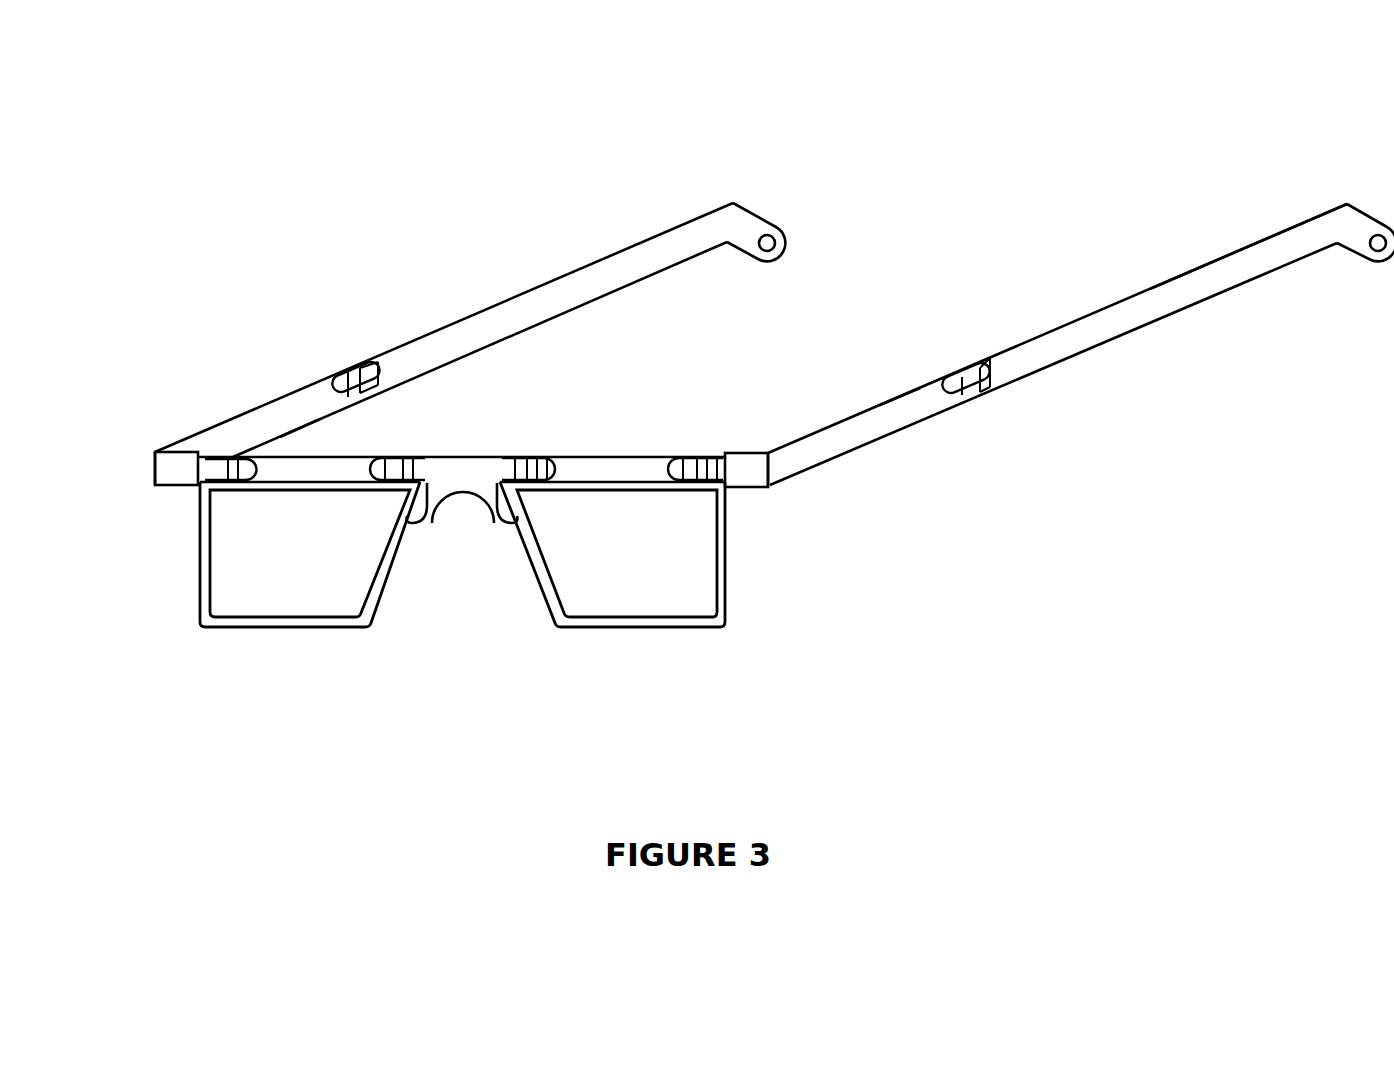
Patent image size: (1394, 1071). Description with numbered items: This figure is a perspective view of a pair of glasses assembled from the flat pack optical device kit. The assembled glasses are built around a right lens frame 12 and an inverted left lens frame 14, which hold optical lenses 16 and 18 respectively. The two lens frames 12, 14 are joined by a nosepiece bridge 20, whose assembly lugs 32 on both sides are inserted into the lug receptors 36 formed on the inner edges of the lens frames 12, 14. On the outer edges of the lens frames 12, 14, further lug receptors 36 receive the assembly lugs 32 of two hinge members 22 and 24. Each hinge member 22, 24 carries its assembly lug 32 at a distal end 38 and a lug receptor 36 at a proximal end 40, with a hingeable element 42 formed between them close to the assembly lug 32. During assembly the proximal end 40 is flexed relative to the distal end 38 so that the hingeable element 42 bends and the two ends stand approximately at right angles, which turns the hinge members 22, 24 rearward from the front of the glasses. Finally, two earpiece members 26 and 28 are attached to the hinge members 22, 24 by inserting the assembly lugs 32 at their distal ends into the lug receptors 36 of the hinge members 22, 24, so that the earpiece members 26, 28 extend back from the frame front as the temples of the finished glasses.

The lens frame 12 is at (200, 558).
The lens frame 14 is at (727, 565).
The optical lens 16 is at (272, 580).
The optical lens 18 is at (675, 553).
The nosepiece bridge 20 is at (495, 525).
The hinge member 22 is at (262, 405).
The hinge member 24 is at (890, 430).
The earpiece member 26 is at (570, 273).
The earpiece member 28 is at (1158, 322).
The assembly lug 32 is at (367, 363).
The lug receptor 36 is at (347, 370).
The distal end 38 is at (168, 485).
The proximal end 40 is at (300, 387).
The hingeable element 42 is at (157, 463).